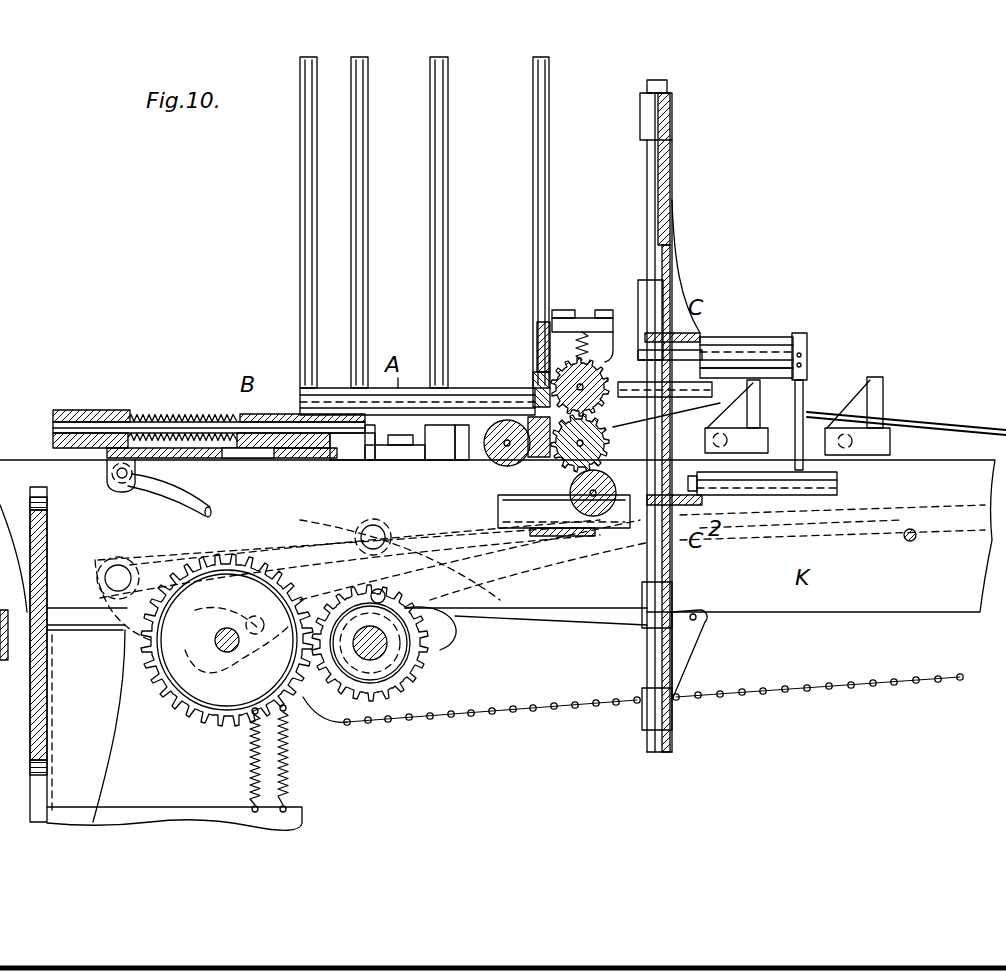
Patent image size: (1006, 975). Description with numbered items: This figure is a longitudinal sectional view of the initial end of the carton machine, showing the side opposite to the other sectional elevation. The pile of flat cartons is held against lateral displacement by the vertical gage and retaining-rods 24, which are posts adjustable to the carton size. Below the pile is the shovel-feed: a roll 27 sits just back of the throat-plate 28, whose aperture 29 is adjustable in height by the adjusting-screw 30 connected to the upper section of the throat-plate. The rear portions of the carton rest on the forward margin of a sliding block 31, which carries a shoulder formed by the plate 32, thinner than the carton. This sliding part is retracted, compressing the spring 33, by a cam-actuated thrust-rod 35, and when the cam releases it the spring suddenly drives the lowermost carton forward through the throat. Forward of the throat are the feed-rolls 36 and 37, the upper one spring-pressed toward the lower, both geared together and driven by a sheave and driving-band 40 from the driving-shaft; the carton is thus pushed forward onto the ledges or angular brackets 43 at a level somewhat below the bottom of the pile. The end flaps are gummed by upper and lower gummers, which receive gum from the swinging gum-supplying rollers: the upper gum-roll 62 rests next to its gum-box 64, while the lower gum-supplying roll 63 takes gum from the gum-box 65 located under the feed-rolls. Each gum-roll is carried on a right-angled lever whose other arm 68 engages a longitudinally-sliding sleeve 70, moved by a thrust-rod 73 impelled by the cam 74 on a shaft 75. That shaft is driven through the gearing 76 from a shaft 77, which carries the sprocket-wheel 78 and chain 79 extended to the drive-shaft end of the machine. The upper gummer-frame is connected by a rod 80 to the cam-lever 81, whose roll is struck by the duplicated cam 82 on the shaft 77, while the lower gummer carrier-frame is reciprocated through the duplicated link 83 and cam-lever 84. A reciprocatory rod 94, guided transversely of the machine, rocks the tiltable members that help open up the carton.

The gage and retaining-rods 24 is at (298, 291).
The roll 27 is at (505, 438).
The throat-plate 28 is at (534, 380).
The aperture 29 is at (500, 452).
The adjusting-screw 30 is at (540, 330).
The sliding block 31 is at (205, 418).
The plate 32 is at (282, 415).
The spring 33 is at (170, 417).
The thrust-rod 35 is at (198, 500).
The feed-roll 36 is at (590, 356).
The feed-roll 37 is at (520, 498).
The driving-band 40 is at (927, 420).
The ledges 43 is at (880, 443).
The upper gum-roll 62 is at (738, 352).
The lower gum-supplying roll 63 is at (770, 488).
The gum-box 64 is at (790, 340).
The gum-box 65 is at (612, 526).
The arm 68 is at (627, 298).
The sliding sleeve 70 is at (746, 340).
The thrust-rod 73 is at (412, 520).
The cam 74 is at (227, 640).
The shaft 75 is at (238, 638).
The gearing 76 is at (212, 712).
The shaft 77 is at (388, 643).
The sprocket-wheel 78 is at (395, 700).
The chain 79 is at (568, 713).
The rod 80 is at (681, 290).
The cam-lever 81 is at (322, 522).
The cam 82 is at (435, 655).
The link 83 is at (683, 657).
The cam-lever 84 is at (605, 618).
The reciprocatory rod 94 is at (912, 541).